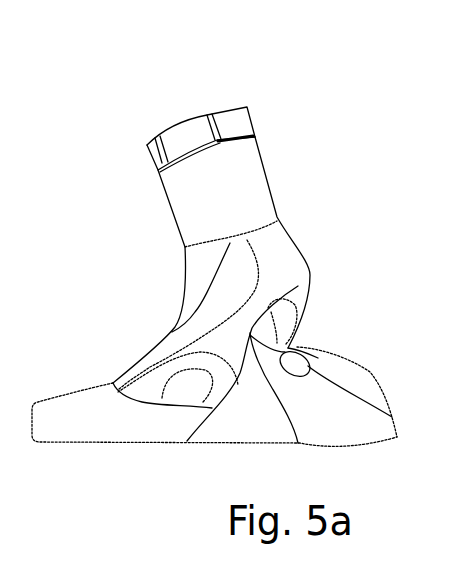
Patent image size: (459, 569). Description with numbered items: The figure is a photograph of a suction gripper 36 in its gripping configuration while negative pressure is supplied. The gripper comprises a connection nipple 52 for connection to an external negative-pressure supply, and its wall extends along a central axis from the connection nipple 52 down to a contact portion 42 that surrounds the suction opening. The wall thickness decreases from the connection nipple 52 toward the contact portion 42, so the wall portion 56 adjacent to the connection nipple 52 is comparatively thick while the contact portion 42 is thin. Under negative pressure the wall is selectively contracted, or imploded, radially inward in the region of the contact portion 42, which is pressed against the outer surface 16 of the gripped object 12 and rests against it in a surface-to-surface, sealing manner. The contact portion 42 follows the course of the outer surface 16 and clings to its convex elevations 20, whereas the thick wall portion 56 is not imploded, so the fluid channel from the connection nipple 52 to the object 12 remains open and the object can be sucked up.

The suction gripper 36 is at (189, 71).
The connection nipple 52 is at (292, 173).
The wall portion 56 is at (318, 250).
The convex elevations 20 is at (314, 377).
The outer surface 16 is at (292, 364).
The object 12 is at (87, 423).
The contact portion 42 is at (148, 402).